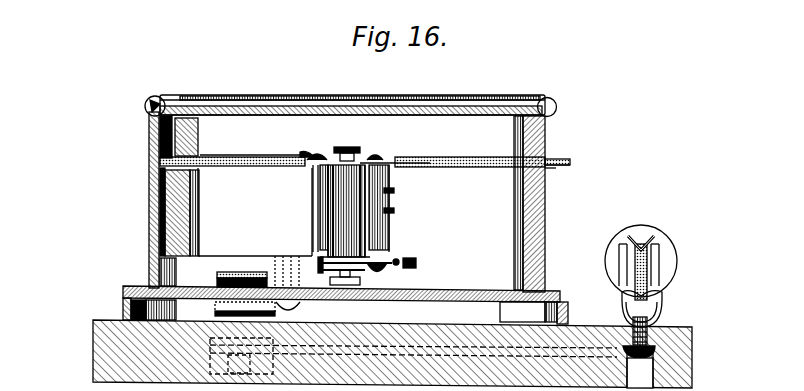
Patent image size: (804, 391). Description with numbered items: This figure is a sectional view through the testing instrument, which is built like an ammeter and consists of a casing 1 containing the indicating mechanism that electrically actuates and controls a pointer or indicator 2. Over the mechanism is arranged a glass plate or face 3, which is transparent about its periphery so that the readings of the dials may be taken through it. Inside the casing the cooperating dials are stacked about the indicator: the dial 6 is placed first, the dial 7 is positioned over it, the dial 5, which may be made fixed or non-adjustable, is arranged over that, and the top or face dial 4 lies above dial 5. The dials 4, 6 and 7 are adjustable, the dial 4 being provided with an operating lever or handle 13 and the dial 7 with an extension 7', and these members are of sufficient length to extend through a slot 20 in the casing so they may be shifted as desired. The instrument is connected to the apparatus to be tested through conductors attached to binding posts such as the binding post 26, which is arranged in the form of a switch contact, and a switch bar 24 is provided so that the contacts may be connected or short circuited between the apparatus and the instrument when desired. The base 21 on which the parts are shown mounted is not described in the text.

The casing 1 is at (152, 173).
The pointer or indicator 2 is at (278, 160).
The glass plate or face 3 is at (200, 110).
The dial 4 is at (430, 163).
The dial 5 is at (462, 164).
The dial 6 is at (484, 168).
The dial 7 is at (365, 202).
The extension 7' is at (569, 179).
The operating lever or handle 13 is at (553, 162).
The slot 20 is at (544, 186).
The base 21 is at (94, 326).
The switch bar 24 is at (642, 240).
The binding post 26 is at (664, 253).